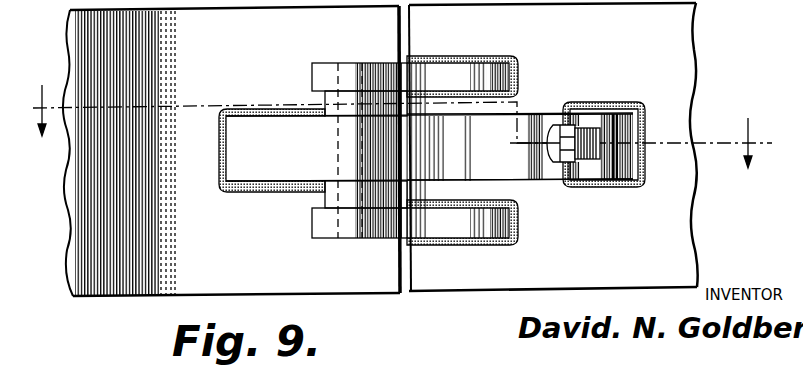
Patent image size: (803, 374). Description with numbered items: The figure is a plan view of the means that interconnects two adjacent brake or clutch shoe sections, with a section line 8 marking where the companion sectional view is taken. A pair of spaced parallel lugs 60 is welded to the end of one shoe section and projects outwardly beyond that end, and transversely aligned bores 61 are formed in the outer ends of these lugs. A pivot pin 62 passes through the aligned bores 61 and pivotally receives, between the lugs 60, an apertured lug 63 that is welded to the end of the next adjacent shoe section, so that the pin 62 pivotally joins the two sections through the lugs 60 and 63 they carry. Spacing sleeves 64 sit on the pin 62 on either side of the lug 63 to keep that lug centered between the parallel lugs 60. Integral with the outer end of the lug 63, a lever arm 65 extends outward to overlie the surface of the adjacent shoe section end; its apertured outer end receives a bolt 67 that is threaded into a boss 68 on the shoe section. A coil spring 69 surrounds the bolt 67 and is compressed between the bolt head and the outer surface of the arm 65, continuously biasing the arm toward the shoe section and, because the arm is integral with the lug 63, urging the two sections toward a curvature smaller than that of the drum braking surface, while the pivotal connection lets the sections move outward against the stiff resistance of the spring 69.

The section line 8 is at (402, 126).
The spaced parallel lugs 60 is at (440, 70).
The transversely aligned bores 61 is at (336, 74).
The pivot pin 62 is at (362, 236).
The apertured lug 63 is at (245, 146).
The spacing sleeves 64 is at (325, 99).
The lever arm 65 is at (508, 123).
The bolt 67 is at (556, 163).
The boss 68 is at (628, 113).
The coil spring 69 is at (588, 182).